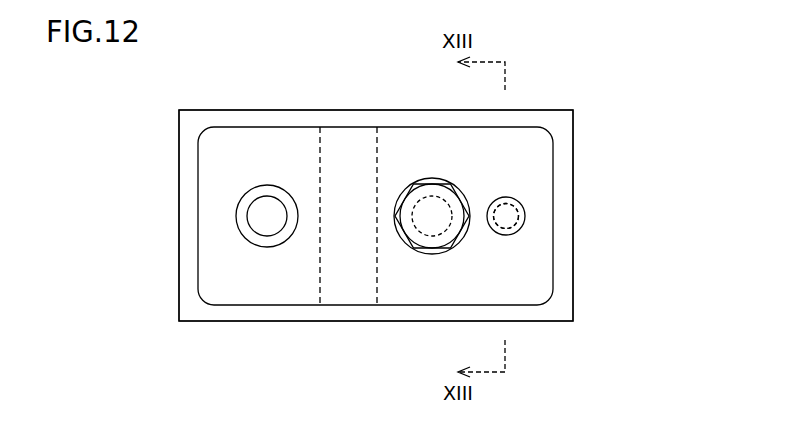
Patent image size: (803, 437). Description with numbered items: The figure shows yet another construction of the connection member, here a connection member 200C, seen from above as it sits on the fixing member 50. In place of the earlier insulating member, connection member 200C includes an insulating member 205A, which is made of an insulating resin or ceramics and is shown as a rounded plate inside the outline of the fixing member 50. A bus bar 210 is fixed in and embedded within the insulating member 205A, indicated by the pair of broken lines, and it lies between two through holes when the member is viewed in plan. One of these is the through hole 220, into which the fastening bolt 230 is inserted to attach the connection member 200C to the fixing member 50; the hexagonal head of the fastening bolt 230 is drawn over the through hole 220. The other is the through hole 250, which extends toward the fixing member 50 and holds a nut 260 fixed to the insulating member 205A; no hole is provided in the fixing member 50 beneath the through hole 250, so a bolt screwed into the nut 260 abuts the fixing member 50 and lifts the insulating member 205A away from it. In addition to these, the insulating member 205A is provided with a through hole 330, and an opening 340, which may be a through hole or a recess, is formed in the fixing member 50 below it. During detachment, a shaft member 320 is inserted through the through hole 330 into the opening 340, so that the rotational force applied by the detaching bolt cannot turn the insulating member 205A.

The fixing member 50 is at (573, 264).
The connection member 200C is at (556, 88).
The insulating member 205A is at (248, 127).
The bus bar 210 is at (350, 157).
The through hole 220 is at (425, 222).
The fastening bolt 230 is at (420, 180).
The through hole 250 is at (244, 194).
The nut 260 is at (237, 217).
The shaft member 320 is at (512, 198).
The through hole 330 is at (508, 217).
The opening 340 is at (613, 221).